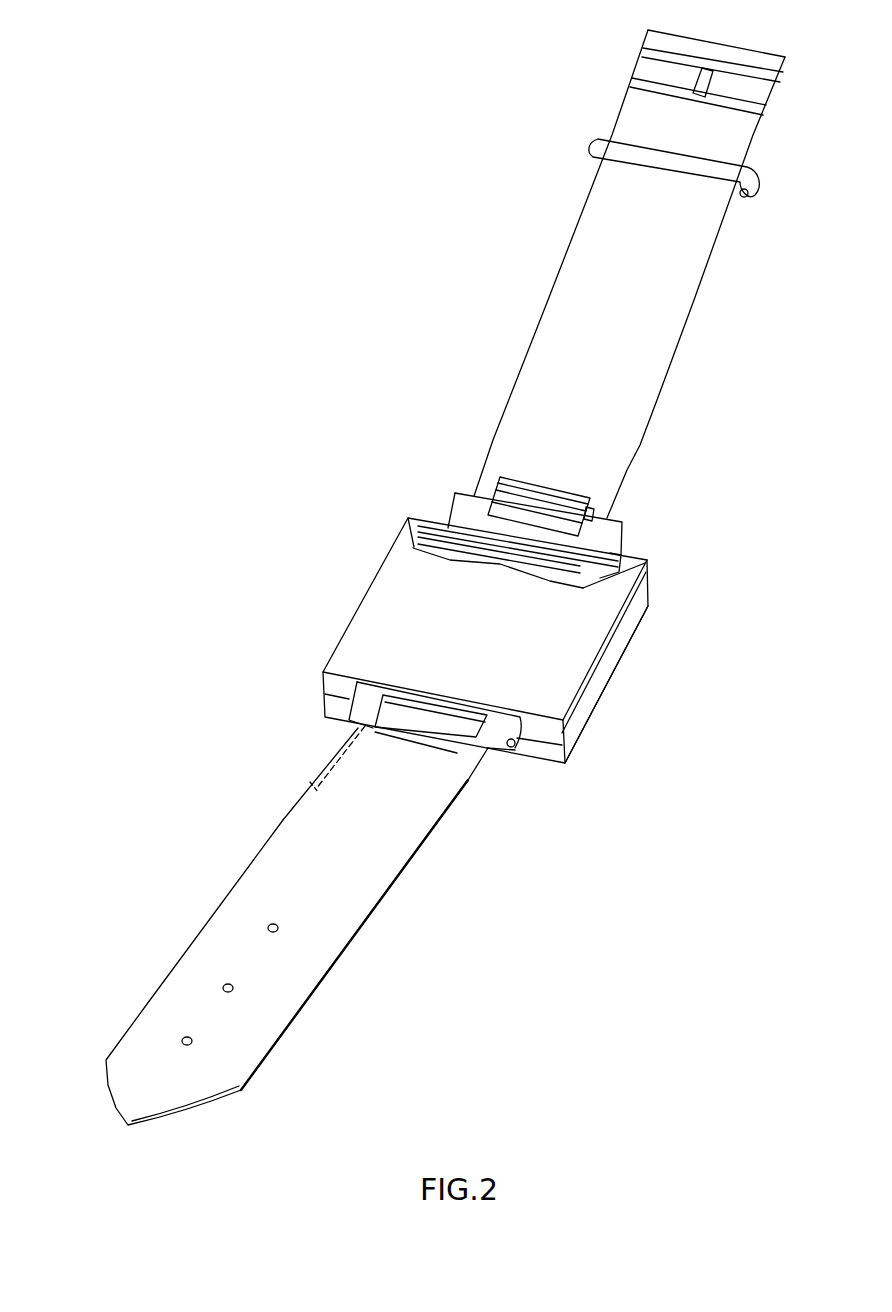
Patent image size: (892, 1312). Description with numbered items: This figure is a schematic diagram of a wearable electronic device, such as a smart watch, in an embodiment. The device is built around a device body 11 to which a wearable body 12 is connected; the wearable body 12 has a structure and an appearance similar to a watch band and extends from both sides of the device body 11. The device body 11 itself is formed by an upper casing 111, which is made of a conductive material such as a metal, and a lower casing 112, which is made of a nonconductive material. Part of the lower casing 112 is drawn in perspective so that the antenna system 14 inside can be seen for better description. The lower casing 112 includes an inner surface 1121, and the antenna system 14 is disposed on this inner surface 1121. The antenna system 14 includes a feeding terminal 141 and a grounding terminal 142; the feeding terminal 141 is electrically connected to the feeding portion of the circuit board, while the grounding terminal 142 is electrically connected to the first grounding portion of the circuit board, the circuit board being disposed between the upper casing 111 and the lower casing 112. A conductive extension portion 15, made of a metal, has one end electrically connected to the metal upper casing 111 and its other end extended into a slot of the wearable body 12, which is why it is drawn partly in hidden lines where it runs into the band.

The device body 11 is at (503, 577).
The wearable body 12 is at (603, 262).
The antenna system 14 is at (458, 489).
The feeding terminal 141 is at (447, 536).
The grounding terminal 142 is at (420, 520).
The conductive extension portion 15 is at (327, 767).
The upper casing 111 is at (625, 644).
The lower casing 112 is at (548, 613).
The inner surface 1121 is at (620, 570).